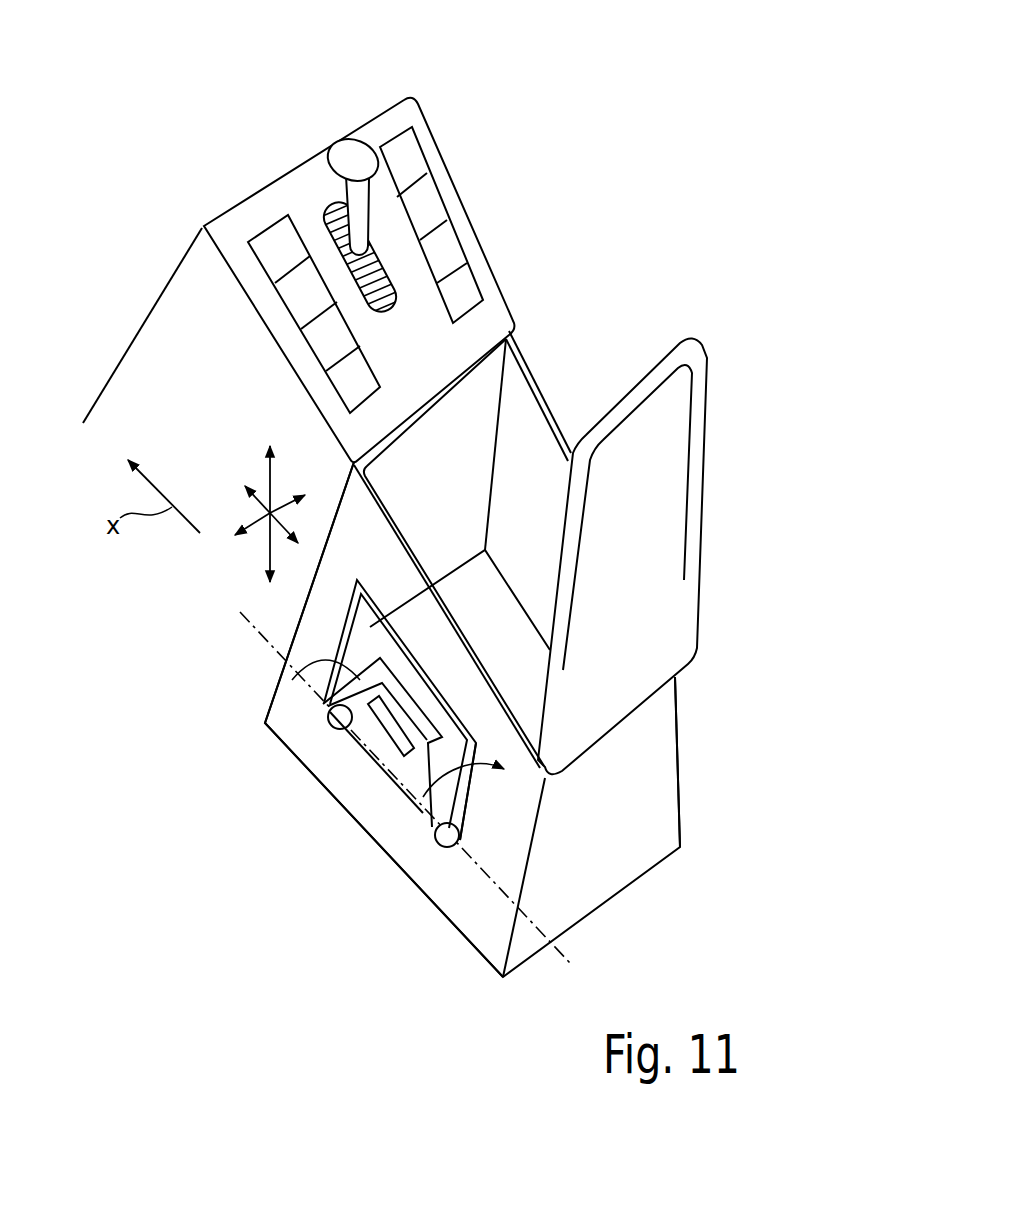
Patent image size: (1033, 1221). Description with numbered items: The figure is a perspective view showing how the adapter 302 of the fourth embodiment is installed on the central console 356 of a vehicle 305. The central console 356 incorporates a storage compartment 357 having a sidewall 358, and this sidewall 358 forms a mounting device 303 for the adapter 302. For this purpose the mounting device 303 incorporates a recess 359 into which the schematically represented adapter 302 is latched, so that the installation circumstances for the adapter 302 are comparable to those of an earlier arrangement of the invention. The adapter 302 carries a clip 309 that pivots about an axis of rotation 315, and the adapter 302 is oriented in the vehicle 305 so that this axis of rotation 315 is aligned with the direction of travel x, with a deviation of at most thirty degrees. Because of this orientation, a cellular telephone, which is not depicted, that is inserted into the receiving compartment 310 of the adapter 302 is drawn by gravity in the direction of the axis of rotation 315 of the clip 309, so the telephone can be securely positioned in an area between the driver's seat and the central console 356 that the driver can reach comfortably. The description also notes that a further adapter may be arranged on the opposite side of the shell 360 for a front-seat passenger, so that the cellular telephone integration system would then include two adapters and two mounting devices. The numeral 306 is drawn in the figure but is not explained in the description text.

The adapter 302 is at (367, 622).
The mounting device 303 is at (517, 810).
The vehicle 305 is at (596, 168).
The lower edge of opening 306 is at (435, 578).
The clip 309 is at (292, 680).
The receiving compartment 310 is at (455, 747).
The axis of rotation 315 is at (487, 878).
The central console 356 is at (385, 120).
The storage compartment 357 is at (643, 330).
The sidewall 358 is at (440, 882).
The recess 359 is at (467, 807).
The shell 360 is at (676, 720).